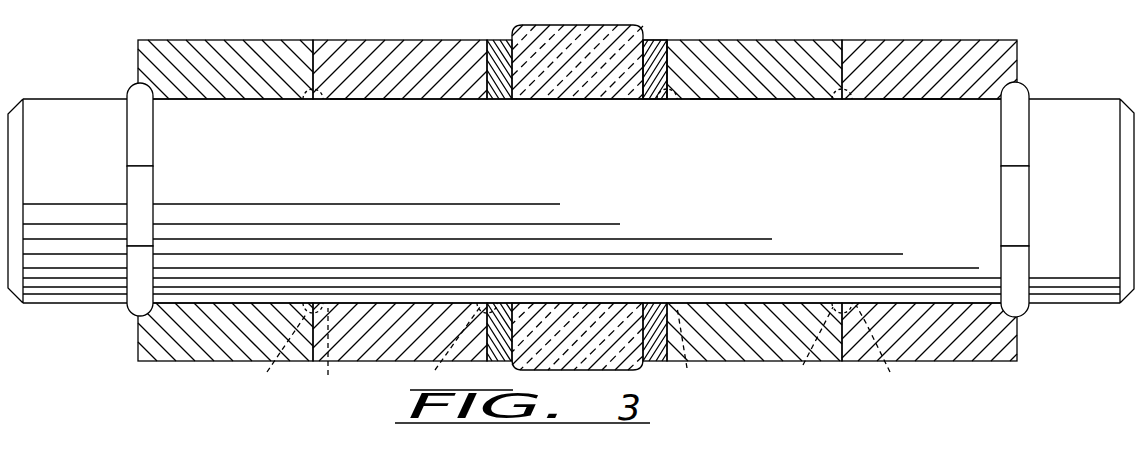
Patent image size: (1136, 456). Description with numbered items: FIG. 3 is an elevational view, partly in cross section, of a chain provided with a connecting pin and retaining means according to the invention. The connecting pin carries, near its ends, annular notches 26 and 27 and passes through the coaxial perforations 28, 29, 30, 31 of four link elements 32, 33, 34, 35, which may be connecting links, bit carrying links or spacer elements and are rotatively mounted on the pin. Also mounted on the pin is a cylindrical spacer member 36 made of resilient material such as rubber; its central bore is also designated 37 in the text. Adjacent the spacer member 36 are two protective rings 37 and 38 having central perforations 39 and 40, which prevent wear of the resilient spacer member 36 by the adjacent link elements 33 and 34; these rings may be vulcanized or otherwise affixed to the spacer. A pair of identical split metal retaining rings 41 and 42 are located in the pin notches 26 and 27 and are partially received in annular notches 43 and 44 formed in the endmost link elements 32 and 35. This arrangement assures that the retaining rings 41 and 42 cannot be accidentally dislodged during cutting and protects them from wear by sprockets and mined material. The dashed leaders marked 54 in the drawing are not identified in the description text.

The annular notch 26 is at (143, 190).
The annular notch 27 is at (1010, 184).
The coaxial perforation 28 is at (250, 99).
The coaxial perforation 29 is at (362, 99).
The coaxial perforation 30 is at (712, 99).
The coaxial perforation 31 is at (905, 99).
The link element 32 is at (215, 43).
The link element 33 is at (352, 48).
The link element 34 is at (733, 45).
The link element 35 is at (897, 40).
The cylindrical spacer member 36 is at (577, 26).
The protective ring 37 is at (565, 99).
The protective ring 38 is at (654, 36).
The central perforation 39 is at (500, 99).
The central perforation 40 is at (657, 99).
The split metal retaining ring 41 is at (148, 272).
The split metal retaining ring 42 is at (1010, 260).
The annular notch 43 is at (160, 92).
The annular notch 44 is at (1003, 94).
The locking pin 54 is at (585, 352).